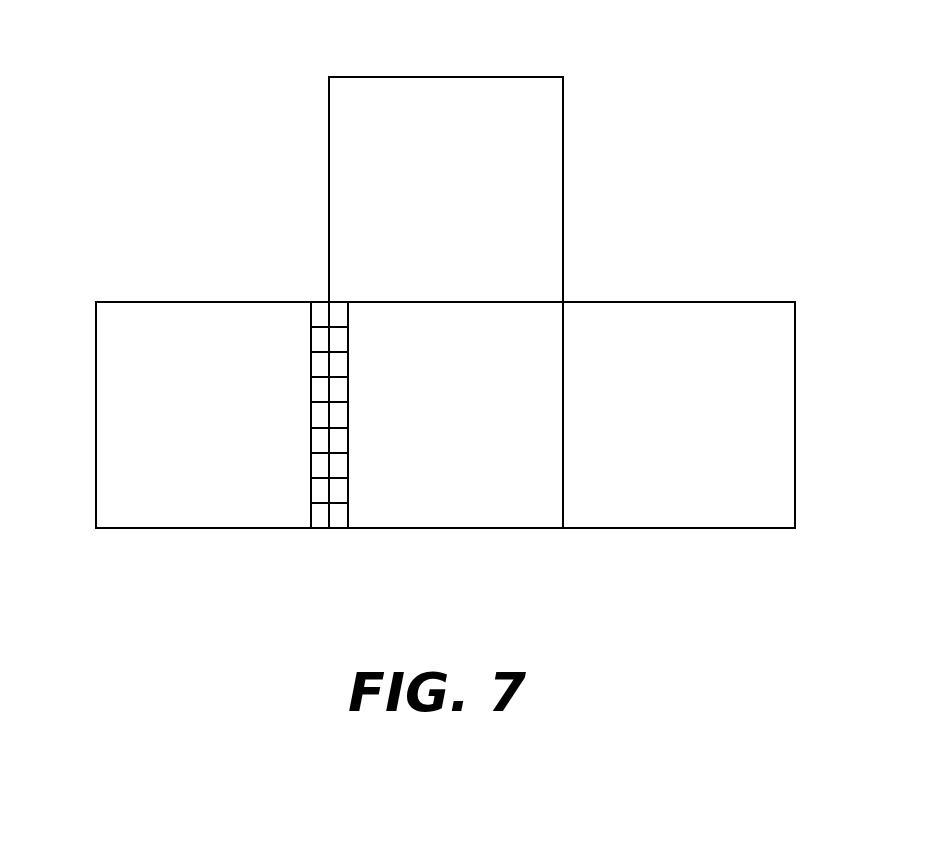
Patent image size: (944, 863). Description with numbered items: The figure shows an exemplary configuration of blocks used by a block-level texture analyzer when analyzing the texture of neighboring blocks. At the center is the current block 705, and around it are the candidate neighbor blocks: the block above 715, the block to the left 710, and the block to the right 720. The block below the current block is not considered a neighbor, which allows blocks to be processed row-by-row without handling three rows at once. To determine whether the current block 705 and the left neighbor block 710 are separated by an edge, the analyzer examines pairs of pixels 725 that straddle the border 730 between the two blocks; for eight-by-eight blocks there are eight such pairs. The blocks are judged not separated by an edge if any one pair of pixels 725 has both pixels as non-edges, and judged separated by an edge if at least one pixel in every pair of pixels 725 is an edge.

The current block 705 is at (513, 528).
The neighbor block (left) 710 is at (132, 302).
The neighbor block (above) 715 is at (393, 77).
The neighbor block (right) 720 is at (743, 302).
The pairs of pixels 725 is at (298, 307).
The border 730 is at (328, 530).